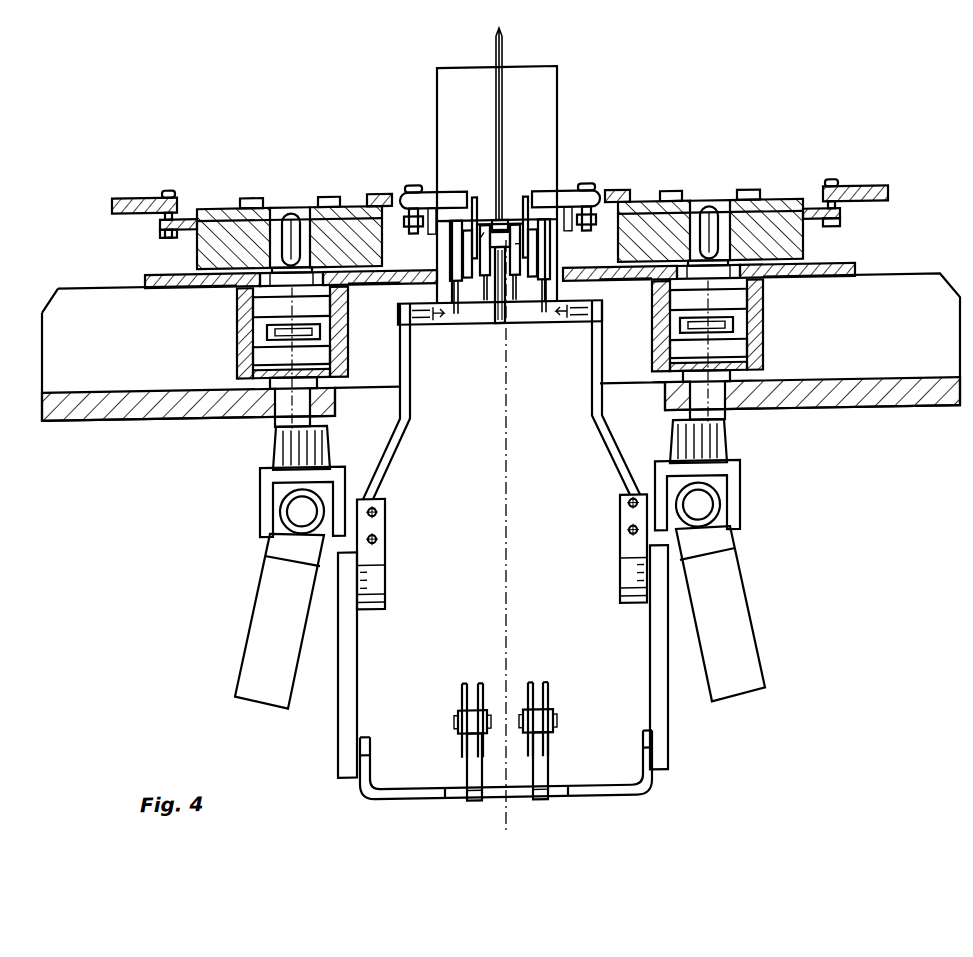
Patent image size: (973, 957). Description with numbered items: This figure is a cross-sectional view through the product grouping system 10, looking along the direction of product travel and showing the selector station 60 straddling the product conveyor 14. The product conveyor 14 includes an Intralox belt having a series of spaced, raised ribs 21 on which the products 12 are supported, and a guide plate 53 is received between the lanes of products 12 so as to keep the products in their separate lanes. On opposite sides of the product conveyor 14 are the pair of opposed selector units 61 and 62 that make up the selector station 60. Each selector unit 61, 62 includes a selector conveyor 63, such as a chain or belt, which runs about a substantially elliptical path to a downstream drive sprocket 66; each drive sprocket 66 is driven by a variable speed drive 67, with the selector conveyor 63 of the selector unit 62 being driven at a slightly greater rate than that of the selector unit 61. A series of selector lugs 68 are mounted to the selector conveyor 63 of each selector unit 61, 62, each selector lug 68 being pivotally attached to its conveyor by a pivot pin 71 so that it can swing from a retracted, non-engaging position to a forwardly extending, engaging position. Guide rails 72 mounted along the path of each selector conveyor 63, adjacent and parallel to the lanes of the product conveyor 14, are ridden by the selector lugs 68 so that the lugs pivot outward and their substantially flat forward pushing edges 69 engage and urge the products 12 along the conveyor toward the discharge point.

The product grouping system 10 is at (265, 78).
The selector station 60 is at (350, 105).
The selector unit 61 is at (235, 178).
The selector unit 62 is at (727, 144).
The guide plate 53 is at (505, 47).
The products 12 is at (447, 91).
The selector lugs 68 is at (148, 189).
The pivot pin 71 is at (412, 189).
The guide rails 72 is at (375, 191).
The selector conveyor 63 is at (807, 213).
The drive sprocket 66 is at (252, 229).
The forward pushing edge 69 is at (432, 209).
The raised ribs 21 is at (481, 240).
The product conveyor 14 is at (515, 255).
The variable speed drive 67 is at (240, 561).